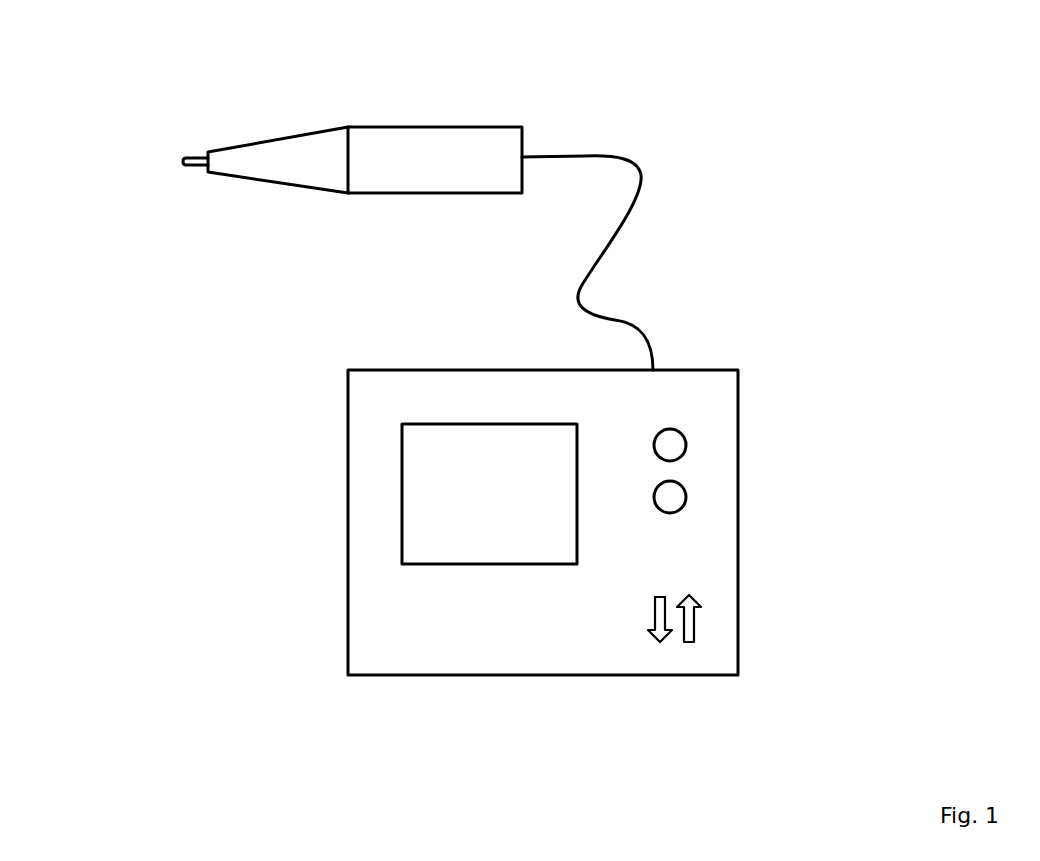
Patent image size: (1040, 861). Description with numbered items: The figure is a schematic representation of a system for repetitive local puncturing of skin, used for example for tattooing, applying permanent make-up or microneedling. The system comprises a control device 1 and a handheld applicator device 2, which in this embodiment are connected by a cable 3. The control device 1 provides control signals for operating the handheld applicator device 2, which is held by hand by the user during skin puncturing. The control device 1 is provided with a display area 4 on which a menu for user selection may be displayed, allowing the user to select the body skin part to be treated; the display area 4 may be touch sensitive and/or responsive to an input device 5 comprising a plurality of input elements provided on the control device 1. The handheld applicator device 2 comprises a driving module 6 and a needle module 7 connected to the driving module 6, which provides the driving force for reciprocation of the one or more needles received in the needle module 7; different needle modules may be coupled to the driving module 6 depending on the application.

The control device 1 is at (417, 376).
The handheld applicator device 2 is at (437, 137).
The cable 3 is at (638, 161).
The display area 4 is at (407, 498).
The input device 5 is at (673, 497).
The driving module 6 is at (363, 137).
The needle module 7 is at (249, 151).